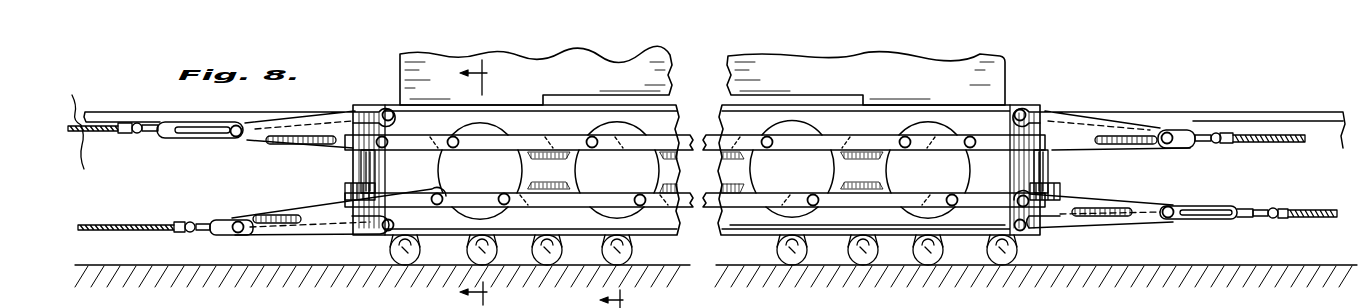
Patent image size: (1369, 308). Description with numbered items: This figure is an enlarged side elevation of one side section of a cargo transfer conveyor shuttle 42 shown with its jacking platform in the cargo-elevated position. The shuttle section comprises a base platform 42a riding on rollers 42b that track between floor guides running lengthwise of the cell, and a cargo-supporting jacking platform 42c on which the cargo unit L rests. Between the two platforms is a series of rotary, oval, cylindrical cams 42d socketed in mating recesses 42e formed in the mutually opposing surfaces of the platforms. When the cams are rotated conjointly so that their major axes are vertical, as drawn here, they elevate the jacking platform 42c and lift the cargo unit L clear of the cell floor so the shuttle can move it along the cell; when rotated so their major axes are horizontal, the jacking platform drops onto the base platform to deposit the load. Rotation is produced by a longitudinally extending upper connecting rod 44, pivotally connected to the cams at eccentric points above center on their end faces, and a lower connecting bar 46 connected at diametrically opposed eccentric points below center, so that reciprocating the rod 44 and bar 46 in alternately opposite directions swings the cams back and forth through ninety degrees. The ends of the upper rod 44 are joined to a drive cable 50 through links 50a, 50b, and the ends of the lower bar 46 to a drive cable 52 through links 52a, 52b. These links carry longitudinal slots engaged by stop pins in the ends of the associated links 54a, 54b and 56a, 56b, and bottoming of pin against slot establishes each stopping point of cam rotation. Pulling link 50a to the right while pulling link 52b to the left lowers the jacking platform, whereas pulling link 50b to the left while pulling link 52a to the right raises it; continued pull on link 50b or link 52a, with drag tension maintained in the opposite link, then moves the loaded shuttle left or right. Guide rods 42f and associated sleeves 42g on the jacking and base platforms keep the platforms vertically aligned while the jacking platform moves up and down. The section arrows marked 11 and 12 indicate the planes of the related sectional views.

The conveyor shuttle 42 is at (1055, 94).
The base platform 42a is at (769, 225).
The rollers 42b is at (627, 249).
The jacking platform 42c is at (990, 111).
The rotary oval cylindrical cams 42d is at (635, 181).
The mating recesses 42e is at (437, 181).
The guide rods 42f is at (372, 168).
The sleeves 42g is at (344, 190).
The connecting rod 44 is at (565, 142).
The connecting bar 46 is at (516, 205).
The drive cable 50 is at (1272, 155).
The link 50a is at (1077, 148).
The link 50b is at (193, 142).
The drive cable 52 is at (90, 228).
The link 52a is at (1136, 195).
The link 52b is at (304, 209).
The link 54a is at (1073, 117).
The link 54b is at (335, 111).
The link 56a is at (1112, 224).
The link 56b is at (289, 237).
The section line 11 is at (487, 182).
The section line 12 is at (627, 299).
The cargo unit L is at (401, 65).